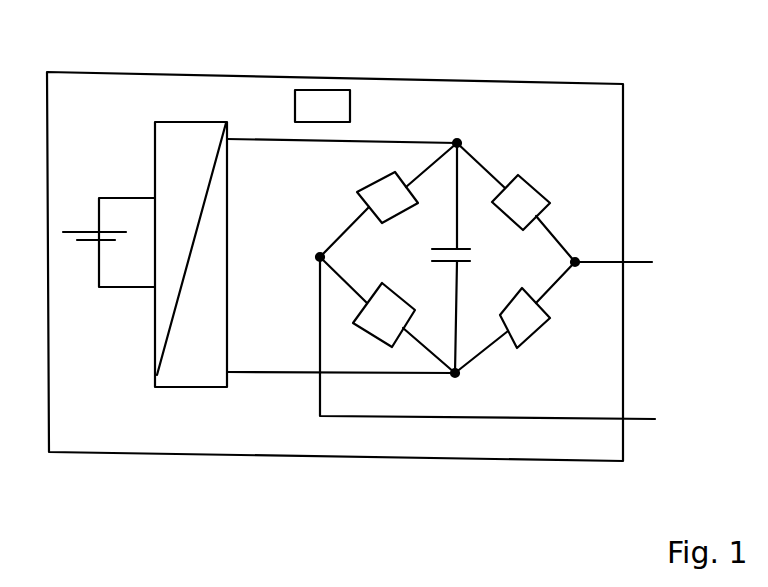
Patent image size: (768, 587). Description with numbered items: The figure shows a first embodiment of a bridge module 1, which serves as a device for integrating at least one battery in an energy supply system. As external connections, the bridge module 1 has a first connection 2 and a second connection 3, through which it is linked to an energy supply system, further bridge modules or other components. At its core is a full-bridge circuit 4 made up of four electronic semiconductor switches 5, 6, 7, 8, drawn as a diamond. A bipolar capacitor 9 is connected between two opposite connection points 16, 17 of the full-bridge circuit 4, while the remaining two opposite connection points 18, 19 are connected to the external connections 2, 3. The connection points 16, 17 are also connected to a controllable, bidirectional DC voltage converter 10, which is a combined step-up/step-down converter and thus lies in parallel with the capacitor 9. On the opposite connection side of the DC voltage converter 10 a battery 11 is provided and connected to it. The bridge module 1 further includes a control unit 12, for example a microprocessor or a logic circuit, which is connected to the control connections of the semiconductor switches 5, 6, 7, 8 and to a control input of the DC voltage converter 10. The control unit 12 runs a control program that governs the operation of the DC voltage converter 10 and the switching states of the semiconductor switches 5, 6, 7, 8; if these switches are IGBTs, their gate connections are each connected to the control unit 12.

The bridge module 1 is at (408, 80).
The first connection 2 is at (640, 262).
The second connection 3 is at (640, 419).
The full-bridge circuit 4 is at (447, 247).
The electronic semiconductor switch 5 is at (521, 202).
The electronic semiconductor switch 6 is at (525, 318).
The electronic semiconductor switch 7 is at (384, 315).
The electronic semiconductor switch 8 is at (387, 197).
The bipolar capacitor 9 is at (464, 262).
The DC voltage converter 10 is at (227, 178).
The battery 11 is at (85, 229).
The control unit 12 is at (350, 104).
The connection point 16 is at (460, 139).
The connection point 17 is at (460, 377).
The connection point 18 is at (316, 254).
The connection point 19 is at (577, 258).